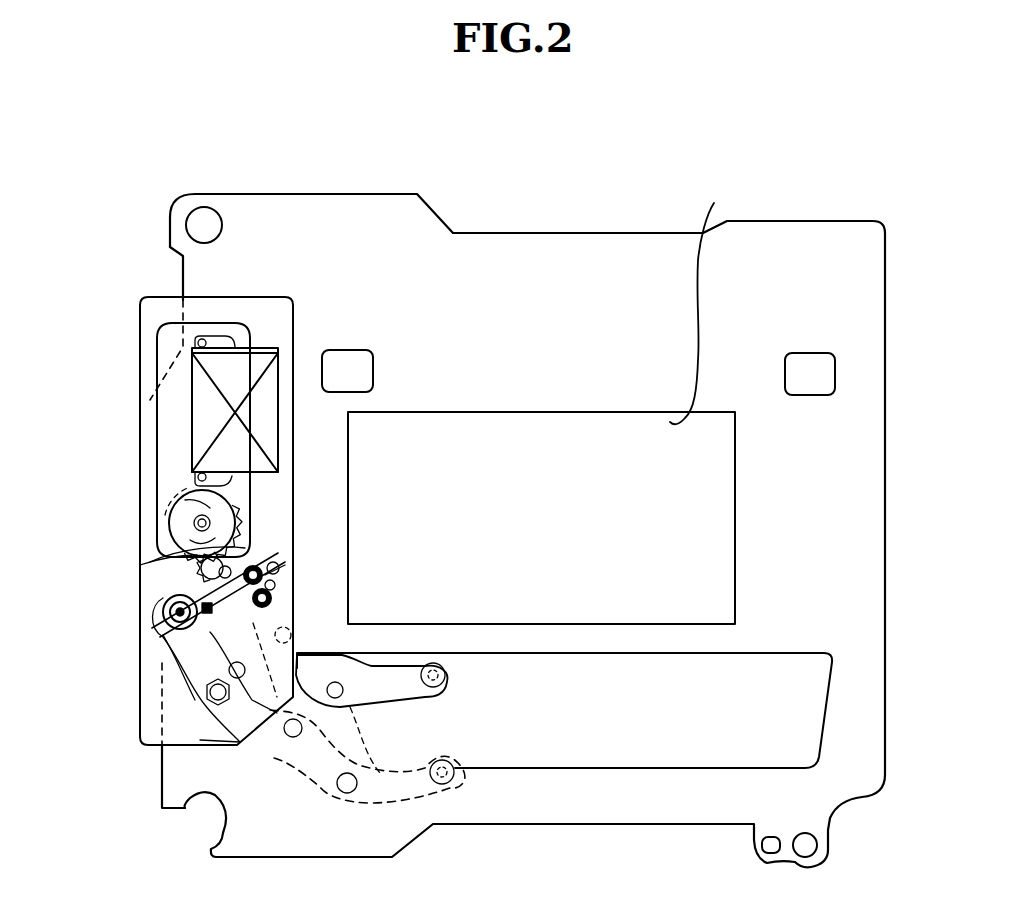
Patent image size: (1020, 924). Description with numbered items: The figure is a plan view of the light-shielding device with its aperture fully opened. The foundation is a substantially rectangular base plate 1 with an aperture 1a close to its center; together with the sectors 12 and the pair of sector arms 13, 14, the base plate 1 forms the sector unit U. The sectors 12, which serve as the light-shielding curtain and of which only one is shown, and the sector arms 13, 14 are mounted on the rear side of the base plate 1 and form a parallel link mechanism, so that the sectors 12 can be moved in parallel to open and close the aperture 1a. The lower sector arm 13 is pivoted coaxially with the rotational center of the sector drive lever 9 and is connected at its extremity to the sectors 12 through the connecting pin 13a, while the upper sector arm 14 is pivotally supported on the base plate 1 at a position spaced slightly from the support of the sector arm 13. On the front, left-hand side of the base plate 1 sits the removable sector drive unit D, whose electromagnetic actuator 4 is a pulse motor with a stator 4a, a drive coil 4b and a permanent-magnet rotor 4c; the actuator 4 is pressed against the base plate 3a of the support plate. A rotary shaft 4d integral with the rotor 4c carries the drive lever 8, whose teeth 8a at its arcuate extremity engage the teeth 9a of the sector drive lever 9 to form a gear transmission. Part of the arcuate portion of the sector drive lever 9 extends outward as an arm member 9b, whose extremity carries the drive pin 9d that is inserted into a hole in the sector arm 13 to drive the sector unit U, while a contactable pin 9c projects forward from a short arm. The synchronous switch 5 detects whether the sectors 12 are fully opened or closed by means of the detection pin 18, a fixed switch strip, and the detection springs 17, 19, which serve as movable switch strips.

The base plate 1 is at (556, 233).
The aperture 1a is at (714, 203).
The sector unit U is at (642, 210).
The base plate of the support plate 3a is at (140, 360).
The electromagnetic actuator 4 is at (156, 443).
The stator 4a is at (157, 445).
The drive coil 4b is at (192, 388).
The rotor 4c is at (168, 513).
The rotary shaft 4d is at (147, 539).
The synchronous switch 5 is at (327, 495).
The drive lever 8 is at (182, 562).
The teeth of the drive lever 8a is at (160, 585).
The sector drive lever 9 is at (152, 645).
The teeth of the sector drive lever 9a is at (165, 618).
The arm member 9b is at (160, 663).
The contactable pin 9c is at (270, 601).
The drive pin 9d is at (147, 750).
The sector drive unit D is at (122, 746).
The sector 12 is at (635, 768).
The sector arm 13 is at (357, 720).
The connecting pin 13a is at (443, 777).
The sector arm 14 is at (447, 703).
The detection spring 17 is at (283, 572).
The detection pin 18 is at (256, 570).
The detection spring 19 is at (278, 564).